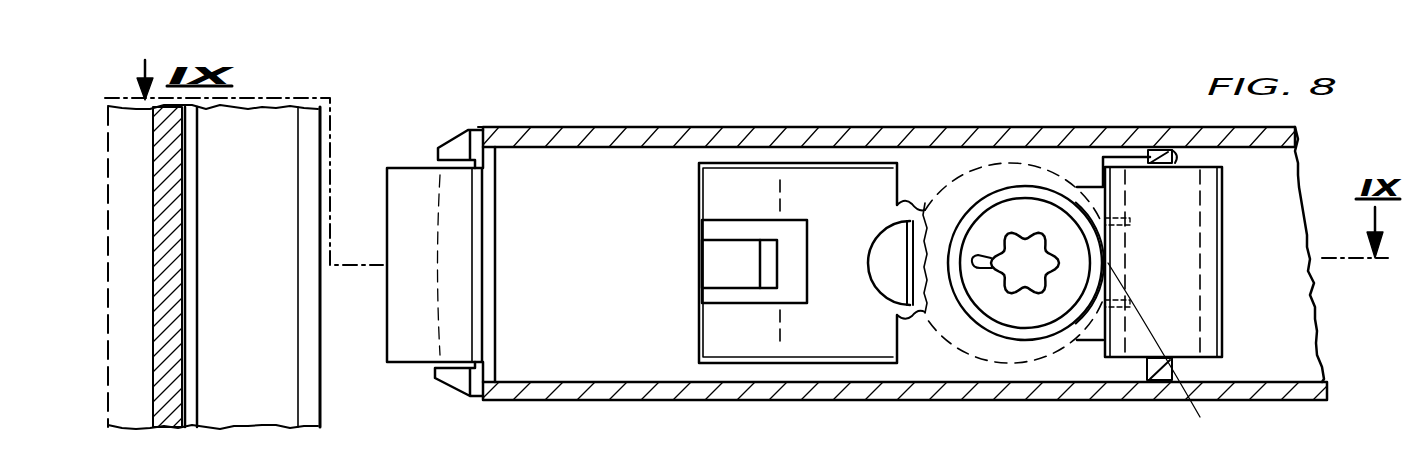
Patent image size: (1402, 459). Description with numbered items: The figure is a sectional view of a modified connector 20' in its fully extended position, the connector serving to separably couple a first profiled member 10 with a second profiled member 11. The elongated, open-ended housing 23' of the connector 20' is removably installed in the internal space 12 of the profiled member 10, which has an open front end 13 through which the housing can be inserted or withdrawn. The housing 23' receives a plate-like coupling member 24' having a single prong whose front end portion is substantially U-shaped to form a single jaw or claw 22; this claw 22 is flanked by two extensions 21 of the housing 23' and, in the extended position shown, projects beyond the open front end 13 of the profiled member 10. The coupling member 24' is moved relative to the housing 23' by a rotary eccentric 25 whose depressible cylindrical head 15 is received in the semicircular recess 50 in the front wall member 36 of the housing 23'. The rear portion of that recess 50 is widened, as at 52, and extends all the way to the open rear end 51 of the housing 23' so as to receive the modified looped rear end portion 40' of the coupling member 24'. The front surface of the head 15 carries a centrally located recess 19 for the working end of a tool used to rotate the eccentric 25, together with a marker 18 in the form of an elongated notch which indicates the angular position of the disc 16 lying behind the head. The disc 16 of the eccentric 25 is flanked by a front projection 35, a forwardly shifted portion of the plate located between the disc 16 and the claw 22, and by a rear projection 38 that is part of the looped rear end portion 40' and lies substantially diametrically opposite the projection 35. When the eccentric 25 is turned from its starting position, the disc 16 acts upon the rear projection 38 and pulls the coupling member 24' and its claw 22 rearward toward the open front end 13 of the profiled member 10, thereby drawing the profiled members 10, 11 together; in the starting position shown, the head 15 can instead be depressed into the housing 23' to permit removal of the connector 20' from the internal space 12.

The first profiled member 10 is at (655, 122).
The second profiled member 11 is at (325, 143).
The internal space 12 is at (1283, 187).
The open front end 13 is at (479, 127).
The head 15 is at (1027, 327).
The disc 16 is at (918, 253).
The marker 18 is at (982, 267).
The recess 19 is at (1022, 273).
The modified connector 20' is at (588, 151).
The extensions 21 is at (455, 150).
The claw 22 is at (410, 215).
The housing 23' is at (702, 140).
The coupling member 24' is at (798, 217).
The rotary eccentric 25 is at (1088, 325).
The front projection 35 is at (892, 257).
The front wall member 36 is at (922, 360).
The rear projection 38 is at (1158, 358).
The looped rear end portion 40' is at (1196, 262).
The semicircular recess 50 is at (1090, 185).
The open rear end 51 is at (1180, 160).
The widened rear portion of the recess 52 is at (1128, 160).